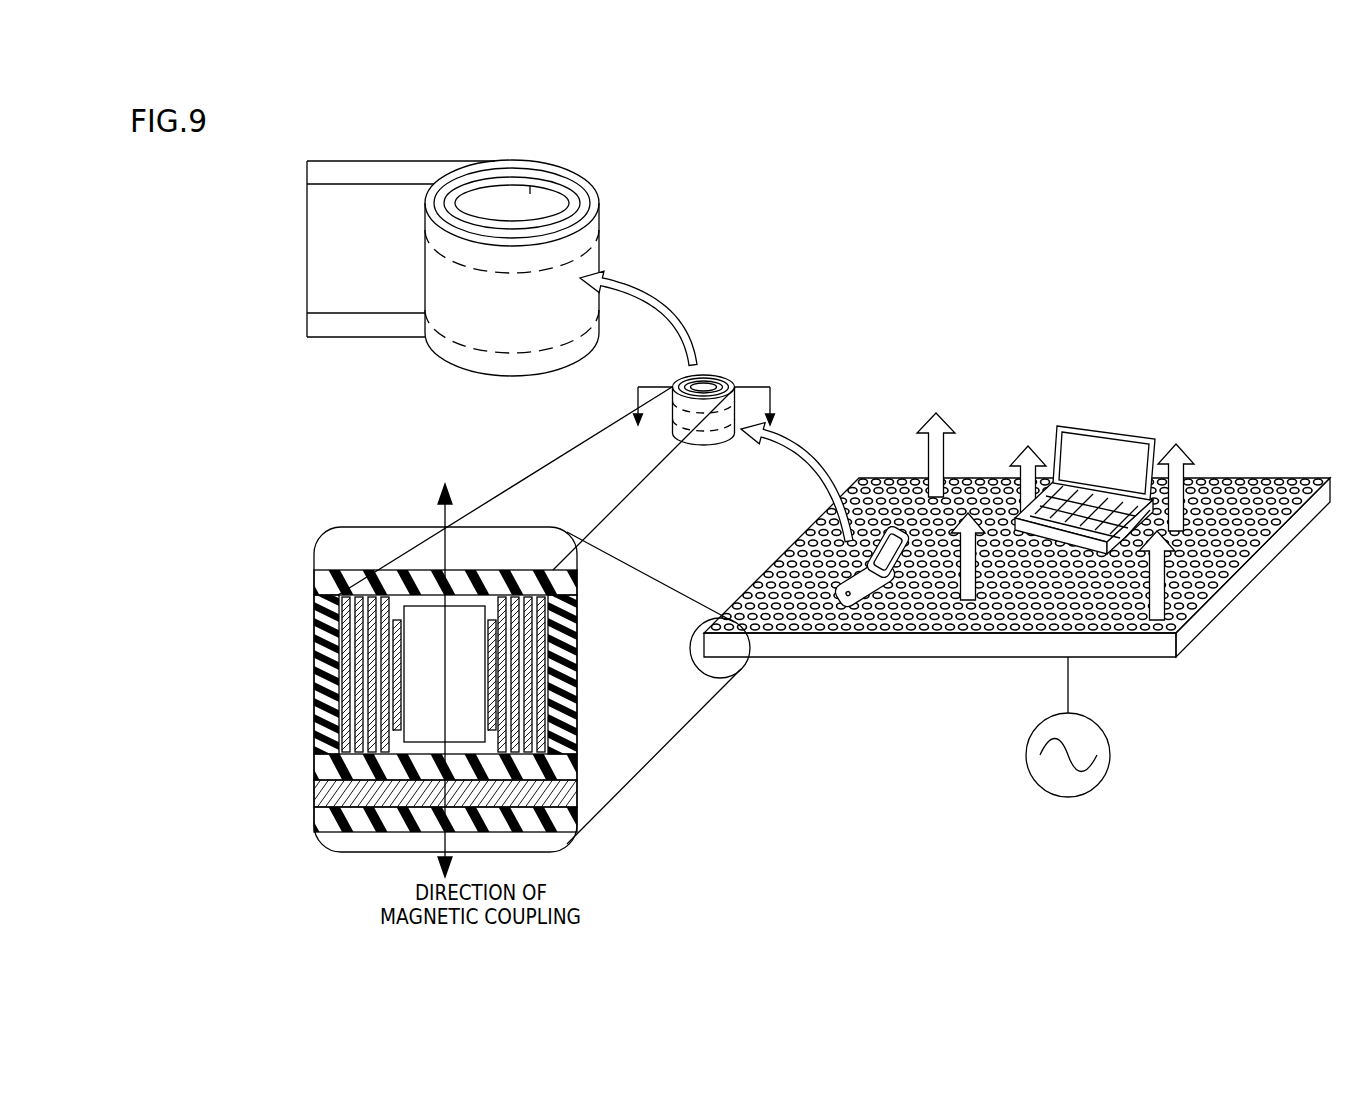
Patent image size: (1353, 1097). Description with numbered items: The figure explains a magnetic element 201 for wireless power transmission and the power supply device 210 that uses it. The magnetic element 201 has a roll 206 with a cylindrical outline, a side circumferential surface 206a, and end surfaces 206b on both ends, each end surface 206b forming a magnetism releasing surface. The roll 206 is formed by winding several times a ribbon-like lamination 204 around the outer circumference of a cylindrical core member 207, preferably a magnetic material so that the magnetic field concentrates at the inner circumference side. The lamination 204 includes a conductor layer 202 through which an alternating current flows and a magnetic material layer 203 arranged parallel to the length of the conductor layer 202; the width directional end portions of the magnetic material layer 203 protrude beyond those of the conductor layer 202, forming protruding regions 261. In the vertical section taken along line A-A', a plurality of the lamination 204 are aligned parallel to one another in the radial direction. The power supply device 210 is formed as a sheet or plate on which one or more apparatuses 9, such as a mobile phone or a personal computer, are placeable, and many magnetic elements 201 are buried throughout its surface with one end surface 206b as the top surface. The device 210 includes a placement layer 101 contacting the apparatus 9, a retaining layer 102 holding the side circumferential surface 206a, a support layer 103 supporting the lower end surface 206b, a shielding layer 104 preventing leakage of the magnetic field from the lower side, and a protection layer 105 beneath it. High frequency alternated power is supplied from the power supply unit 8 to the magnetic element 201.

The power supply unit 8 is at (1113, 755).
The apparatus 9 is at (960, 478).
The placement layer 101 is at (325, 579).
The retaining layer 102 is at (320, 659).
The support layer 103 is at (320, 769).
The shielding layer 104 is at (320, 795).
The protection layer 105 is at (320, 822).
The magnetic element 201 is at (833, 506).
The conductor layer 202 is at (318, 228).
The magnetic material layer 203 is at (318, 327).
The lamination 204 is at (217, 205).
The roll 206 is at (600, 258).
The side circumferential surface 206a is at (530, 320).
The end surface 206b is at (475, 187).
The core member 207 is at (520, 213).
The power supply device 210 is at (1249, 469).
The protruding region 261 is at (336, 613).